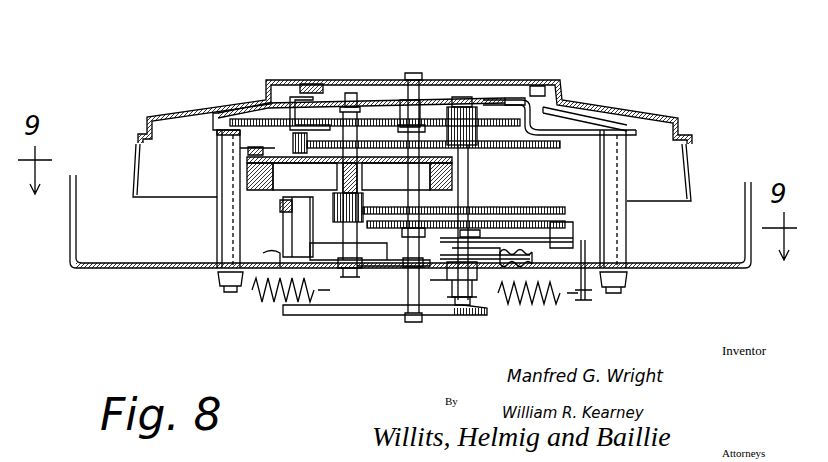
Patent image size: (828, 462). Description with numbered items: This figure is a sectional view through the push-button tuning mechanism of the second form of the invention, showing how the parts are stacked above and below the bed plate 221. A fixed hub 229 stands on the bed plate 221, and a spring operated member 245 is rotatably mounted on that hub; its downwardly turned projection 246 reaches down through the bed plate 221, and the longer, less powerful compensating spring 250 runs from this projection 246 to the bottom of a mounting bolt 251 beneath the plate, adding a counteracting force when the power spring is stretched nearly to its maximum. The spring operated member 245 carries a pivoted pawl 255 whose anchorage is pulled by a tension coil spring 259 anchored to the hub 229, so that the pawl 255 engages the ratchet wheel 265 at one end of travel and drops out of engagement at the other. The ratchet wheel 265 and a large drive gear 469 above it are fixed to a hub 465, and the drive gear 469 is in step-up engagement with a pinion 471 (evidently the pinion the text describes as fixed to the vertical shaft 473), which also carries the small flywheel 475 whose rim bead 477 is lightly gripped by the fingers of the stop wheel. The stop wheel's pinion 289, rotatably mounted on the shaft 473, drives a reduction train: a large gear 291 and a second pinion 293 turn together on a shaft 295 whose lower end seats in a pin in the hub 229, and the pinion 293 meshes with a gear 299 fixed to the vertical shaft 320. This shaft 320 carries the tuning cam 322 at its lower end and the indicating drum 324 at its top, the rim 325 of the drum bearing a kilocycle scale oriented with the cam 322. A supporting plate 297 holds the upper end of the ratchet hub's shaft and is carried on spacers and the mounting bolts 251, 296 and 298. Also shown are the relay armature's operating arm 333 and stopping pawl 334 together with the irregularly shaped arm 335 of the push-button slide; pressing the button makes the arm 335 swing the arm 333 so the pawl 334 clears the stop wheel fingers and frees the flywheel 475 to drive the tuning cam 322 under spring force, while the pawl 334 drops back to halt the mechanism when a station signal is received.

The bed plate 221 is at (717, 280).
The fixed hub 229 is at (480, 285).
The spring operated member 245 is at (573, 245).
The downwardly turned projection 246 is at (586, 292).
The compensating spring 250 is at (279, 300).
The mounting bolt 251 is at (223, 290).
The pawl 255 is at (573, 231).
The tension coil spring 259 is at (530, 260).
The ratchet wheel 265 is at (567, 212).
The pinion 289 is at (340, 108).
The large gear 291 is at (537, 140).
The second pinion 293 is at (483, 110).
The shaft 295 is at (460, 175).
The mounting bolt 296 is at (560, 183).
The supporting plate 297 is at (370, 108).
The mounting bolt 298 is at (620, 287).
The gear 299 is at (440, 107).
The vertical shaft 320 is at (417, 322).
The tuning cam 322 is at (313, 315).
The indicating drum 324 is at (279, 80).
The rim 325 is at (137, 150).
The operating arm 333 is at (276, 205).
The stopping pawl 334 is at (248, 146).
The long irregularly shaped arm 335 is at (283, 243).
The hub 465 is at (467, 207).
The large drive gear 469 is at (563, 203).
The pinion 471 is at (305, 218).
The vertical shaft 473 is at (342, 258).
The small flywheel 475 is at (273, 172).
The rounded annular projection 477 is at (432, 172).